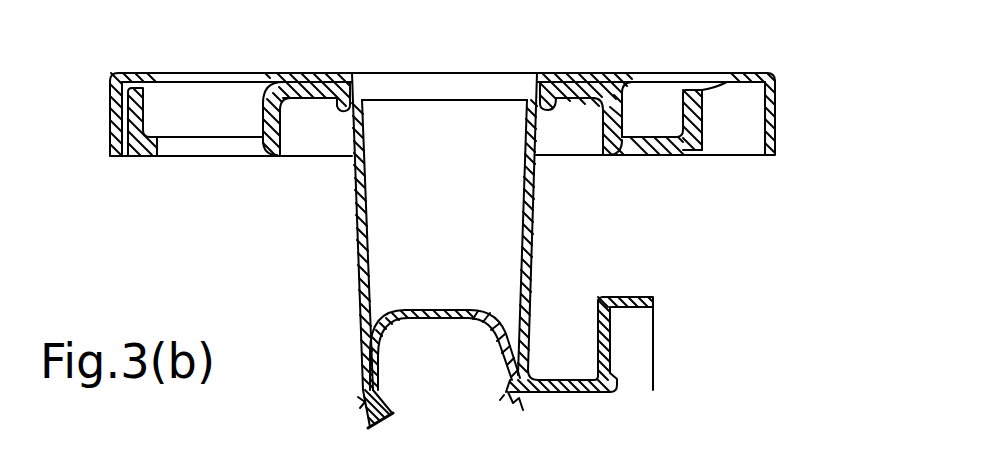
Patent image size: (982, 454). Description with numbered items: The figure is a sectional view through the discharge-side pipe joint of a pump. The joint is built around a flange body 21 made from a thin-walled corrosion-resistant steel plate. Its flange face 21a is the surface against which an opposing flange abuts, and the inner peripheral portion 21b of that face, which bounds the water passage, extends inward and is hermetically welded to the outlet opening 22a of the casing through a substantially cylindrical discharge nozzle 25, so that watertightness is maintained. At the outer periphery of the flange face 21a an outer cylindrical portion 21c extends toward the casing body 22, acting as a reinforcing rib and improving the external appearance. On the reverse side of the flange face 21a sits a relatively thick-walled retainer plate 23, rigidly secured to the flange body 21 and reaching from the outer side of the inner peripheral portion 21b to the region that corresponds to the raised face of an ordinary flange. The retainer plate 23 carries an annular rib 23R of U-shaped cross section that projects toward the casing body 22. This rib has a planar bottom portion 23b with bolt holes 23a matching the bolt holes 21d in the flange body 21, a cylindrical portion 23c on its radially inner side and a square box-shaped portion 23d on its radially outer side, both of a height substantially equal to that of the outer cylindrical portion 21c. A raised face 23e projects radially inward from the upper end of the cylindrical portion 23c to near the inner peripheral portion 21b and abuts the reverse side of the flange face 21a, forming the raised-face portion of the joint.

The flange body 21 is at (579, 25).
The flange face 21a is at (675, 73).
The inner peripheral portion 21b is at (352, 73).
The outer cylindrical portion 21c is at (776, 97).
The bolt holes 21d is at (193, 73).
The casing body 22 is at (557, 366).
The outlet opening 22a is at (449, 310).
The retainer plate 23 is at (630, 77).
The bolt holes 23a is at (197, 145).
The planar bottom portion 23b is at (665, 148).
The cylindrical portion 23c is at (280, 113).
The square box-shaped portion 23d is at (737, 82).
The raised face 23e is at (313, 88).
The annular rib 23R is at (700, 133).
The discharge nozzle 25 is at (355, 237).